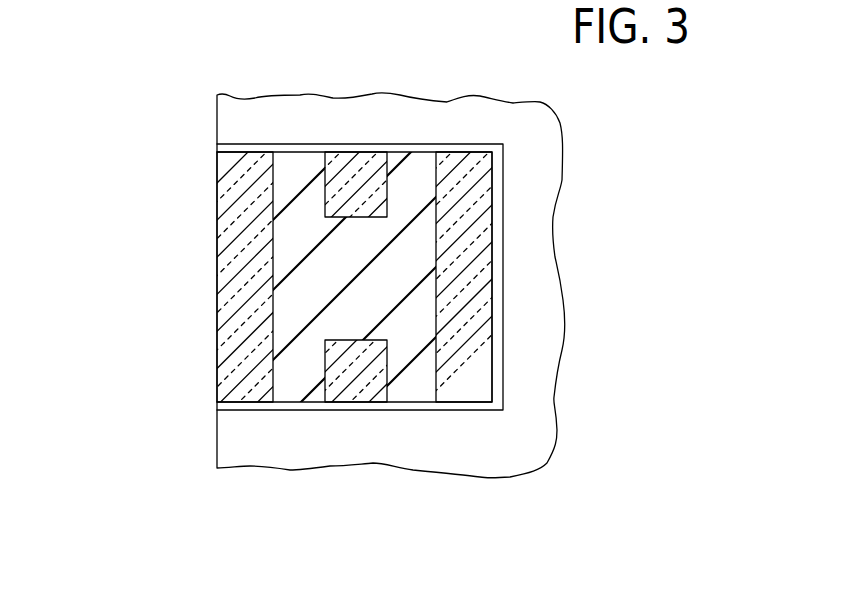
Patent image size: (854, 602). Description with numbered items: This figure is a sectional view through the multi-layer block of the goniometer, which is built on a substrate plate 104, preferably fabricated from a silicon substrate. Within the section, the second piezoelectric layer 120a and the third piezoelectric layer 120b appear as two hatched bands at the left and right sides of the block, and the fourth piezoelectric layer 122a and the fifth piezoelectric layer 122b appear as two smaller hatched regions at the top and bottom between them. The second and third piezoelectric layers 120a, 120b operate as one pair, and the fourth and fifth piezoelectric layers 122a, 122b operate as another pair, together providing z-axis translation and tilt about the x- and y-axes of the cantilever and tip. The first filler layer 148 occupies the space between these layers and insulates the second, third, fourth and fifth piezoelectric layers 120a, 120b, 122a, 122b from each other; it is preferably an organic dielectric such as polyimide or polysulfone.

The substrate plate 104 is at (535, 210).
The second piezoelectric layer 120a is at (226, 350).
The third piezoelectric layer 120b is at (463, 315).
The first filler layer 148 is at (285, 258).
The fourth piezoelectric layer 122a is at (343, 178).
The fifth piezoelectric layer 122b is at (352, 383).